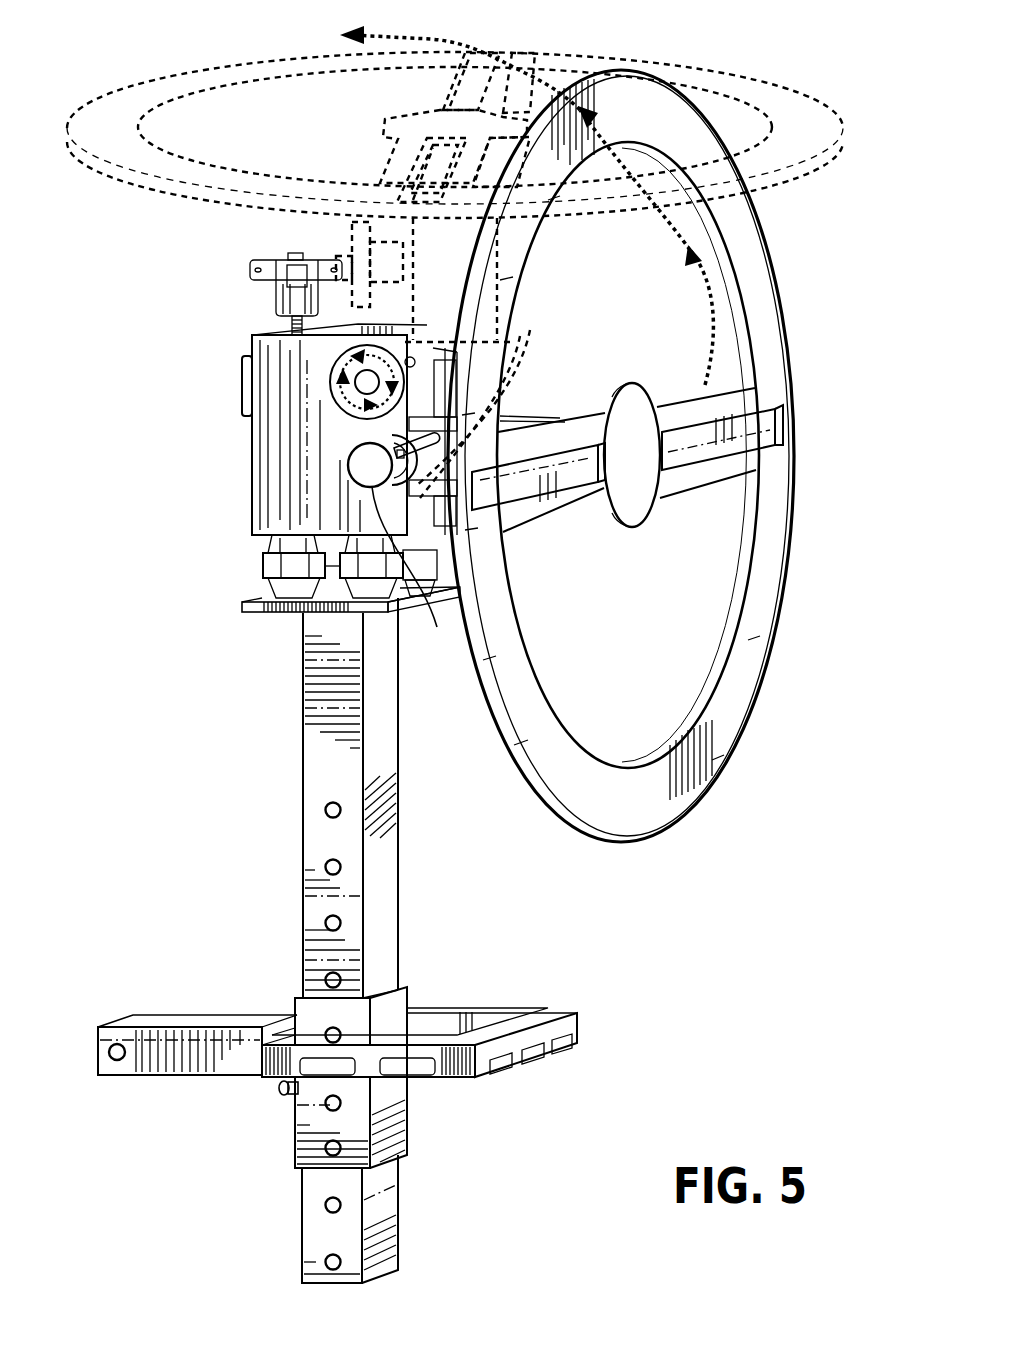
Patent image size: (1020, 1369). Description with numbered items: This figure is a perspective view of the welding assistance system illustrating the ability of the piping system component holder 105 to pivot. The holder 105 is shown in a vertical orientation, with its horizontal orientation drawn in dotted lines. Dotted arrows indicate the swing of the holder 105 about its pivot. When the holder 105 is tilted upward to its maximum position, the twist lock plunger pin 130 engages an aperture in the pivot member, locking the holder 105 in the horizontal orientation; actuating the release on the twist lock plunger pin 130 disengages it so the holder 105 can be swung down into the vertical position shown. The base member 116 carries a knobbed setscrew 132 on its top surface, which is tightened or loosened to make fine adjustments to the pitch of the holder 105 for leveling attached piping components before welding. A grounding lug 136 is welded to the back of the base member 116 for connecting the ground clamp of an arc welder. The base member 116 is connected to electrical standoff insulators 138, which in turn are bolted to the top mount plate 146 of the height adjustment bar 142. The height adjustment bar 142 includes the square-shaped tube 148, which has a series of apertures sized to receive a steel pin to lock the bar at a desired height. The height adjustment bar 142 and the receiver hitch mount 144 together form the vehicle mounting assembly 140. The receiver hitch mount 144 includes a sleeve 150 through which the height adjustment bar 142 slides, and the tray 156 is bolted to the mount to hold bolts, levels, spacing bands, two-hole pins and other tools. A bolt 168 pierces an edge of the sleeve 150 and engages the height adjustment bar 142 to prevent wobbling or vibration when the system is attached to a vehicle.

The piping system component holder 105 is at (781, 325).
The base member 116 is at (250, 505).
The twist lock plunger pin 130 is at (405, 543).
The knobbed setscrew 132 is at (248, 270).
The grounding lug 136 is at (245, 383).
The electrical standoff insulators 138 is at (263, 563).
The vehicle mounting assembly 140 is at (242, 950).
The height adjustment bar 142 is at (398, 900).
The receiver hitch mount 144 is at (168, 1078).
The top mount plate 146 is at (268, 615).
The square-shaped tube 148 is at (393, 768).
The sleeve 150 is at (393, 1102).
The tray 156 is at (592, 1020).
The bolt 168 is at (280, 1090).